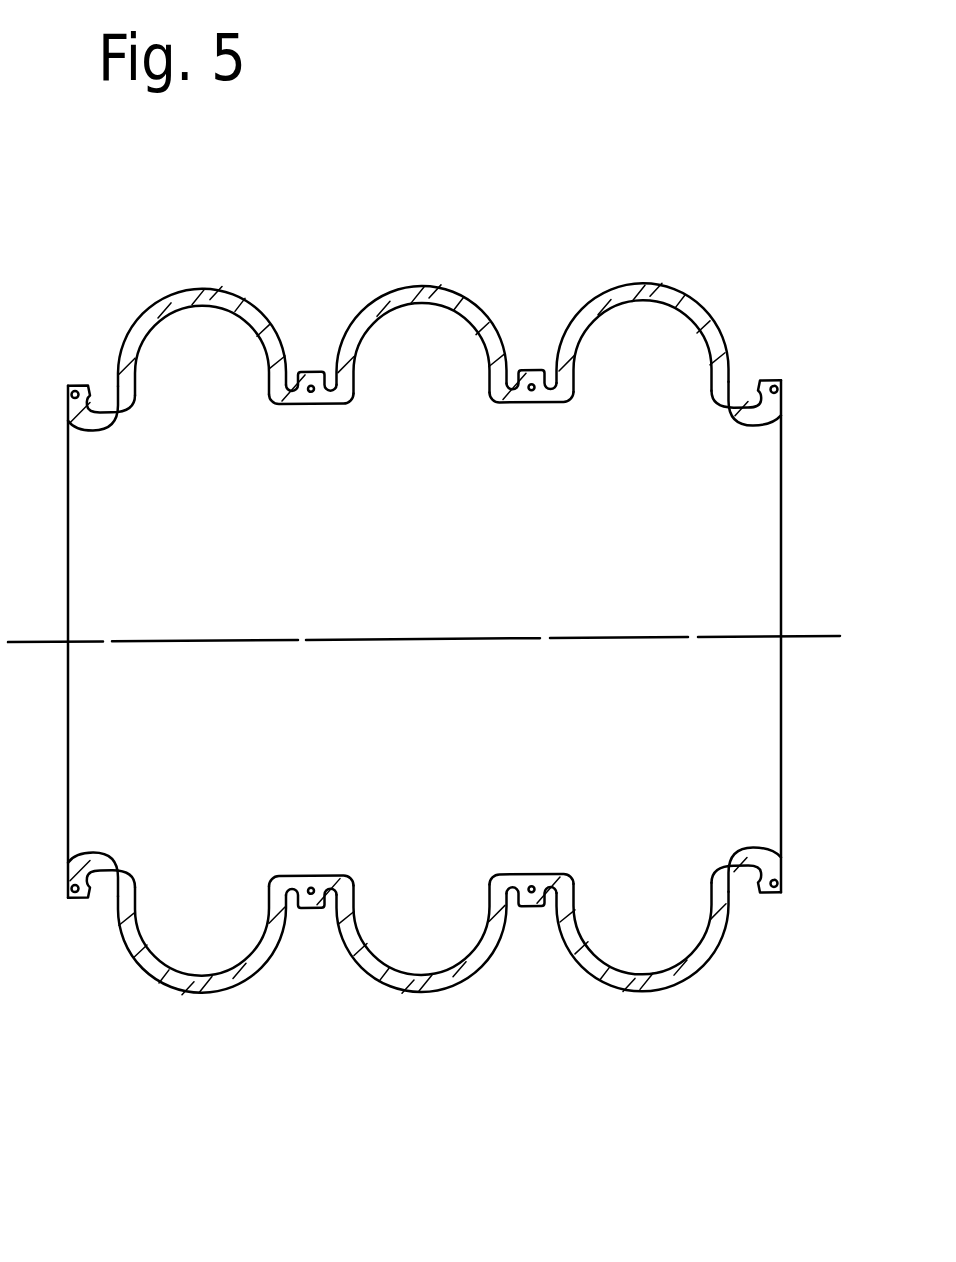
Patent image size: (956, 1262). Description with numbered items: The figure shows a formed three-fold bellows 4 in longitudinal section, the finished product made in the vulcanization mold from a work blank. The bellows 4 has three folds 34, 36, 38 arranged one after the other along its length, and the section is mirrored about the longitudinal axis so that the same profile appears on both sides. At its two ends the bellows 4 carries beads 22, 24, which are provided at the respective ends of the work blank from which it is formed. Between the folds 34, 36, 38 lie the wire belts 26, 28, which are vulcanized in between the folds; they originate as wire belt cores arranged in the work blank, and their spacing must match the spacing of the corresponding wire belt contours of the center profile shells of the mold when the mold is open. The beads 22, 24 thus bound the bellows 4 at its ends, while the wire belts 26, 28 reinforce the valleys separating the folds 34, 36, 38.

The three-fold bellows 4 is at (222, 1027).
The bead 22 is at (82, 383).
The bead 24 is at (776, 378).
The wire belt 26 is at (318, 370).
The wire belt 28 is at (536, 370).
The fold 34 is at (226, 288).
The fold 36 is at (436, 287).
The fold 38 is at (661, 284).